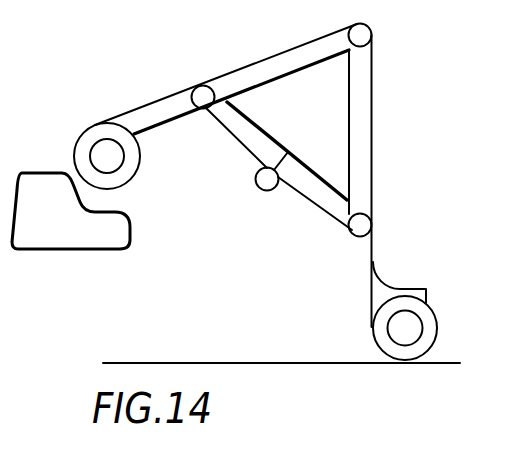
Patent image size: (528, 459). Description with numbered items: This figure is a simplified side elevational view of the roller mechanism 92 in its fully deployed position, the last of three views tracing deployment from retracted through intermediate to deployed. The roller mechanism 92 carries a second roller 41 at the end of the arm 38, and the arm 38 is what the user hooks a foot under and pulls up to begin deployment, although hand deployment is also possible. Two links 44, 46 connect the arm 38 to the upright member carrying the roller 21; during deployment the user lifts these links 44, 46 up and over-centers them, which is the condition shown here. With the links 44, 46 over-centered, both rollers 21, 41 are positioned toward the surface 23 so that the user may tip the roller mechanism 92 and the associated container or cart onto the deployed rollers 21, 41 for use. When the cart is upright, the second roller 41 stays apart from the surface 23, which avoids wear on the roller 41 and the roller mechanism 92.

The arm 38 is at (157, 100).
The second roller 41 is at (125, 170).
The link 46 is at (240, 132).
The link 44 is at (332, 207).
The roller mechanism 92 is at (281, 208).
The roller 21 is at (425, 322).
The surface 23 is at (310, 363).